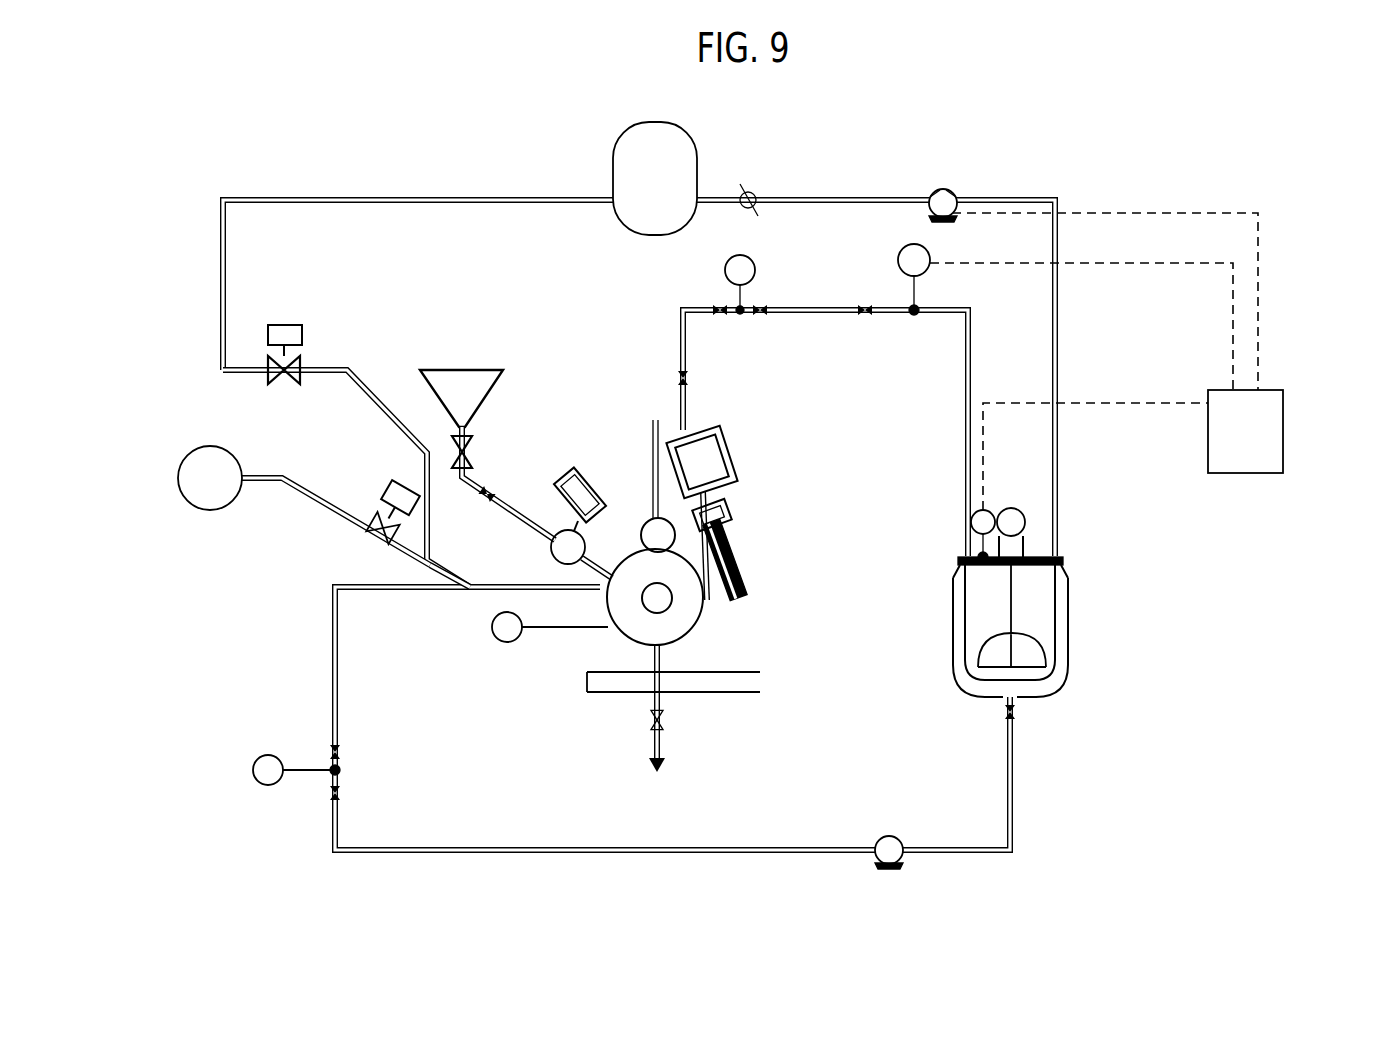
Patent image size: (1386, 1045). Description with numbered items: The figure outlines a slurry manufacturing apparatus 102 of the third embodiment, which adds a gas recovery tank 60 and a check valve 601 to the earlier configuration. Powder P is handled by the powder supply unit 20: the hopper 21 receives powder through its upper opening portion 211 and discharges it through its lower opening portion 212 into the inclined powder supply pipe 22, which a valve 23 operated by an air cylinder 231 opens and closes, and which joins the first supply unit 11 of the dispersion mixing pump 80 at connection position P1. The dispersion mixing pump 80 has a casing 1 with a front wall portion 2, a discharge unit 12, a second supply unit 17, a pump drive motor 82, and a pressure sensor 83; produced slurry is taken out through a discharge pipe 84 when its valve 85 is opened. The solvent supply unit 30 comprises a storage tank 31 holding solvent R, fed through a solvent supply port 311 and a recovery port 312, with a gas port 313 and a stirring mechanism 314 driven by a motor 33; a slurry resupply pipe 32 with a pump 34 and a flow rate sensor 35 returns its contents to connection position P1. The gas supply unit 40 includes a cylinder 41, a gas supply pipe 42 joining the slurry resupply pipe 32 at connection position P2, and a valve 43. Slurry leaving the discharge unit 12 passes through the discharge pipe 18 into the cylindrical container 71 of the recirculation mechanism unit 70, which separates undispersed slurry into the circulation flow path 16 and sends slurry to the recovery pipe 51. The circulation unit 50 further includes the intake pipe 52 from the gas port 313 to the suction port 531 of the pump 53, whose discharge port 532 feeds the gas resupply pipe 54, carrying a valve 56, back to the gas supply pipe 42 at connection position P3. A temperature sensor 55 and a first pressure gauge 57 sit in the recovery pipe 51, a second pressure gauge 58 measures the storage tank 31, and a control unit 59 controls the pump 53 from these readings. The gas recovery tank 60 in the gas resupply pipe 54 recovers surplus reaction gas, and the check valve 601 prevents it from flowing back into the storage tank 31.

The casing 1 is at (695, 622).
The front wall portion 2 is at (606, 631).
The first supply unit 11 is at (636, 520).
The discharge unit 12 is at (674, 598).
The circulation flow path 16 is at (735, 522).
The second supply unit 17 is at (670, 618).
The discharge pipe 18 is at (727, 504).
The powder supply unit 20 is at (510, 334).
The hopper 21 is at (472, 397).
The powder supply pipe 22 is at (492, 518).
The valve 23 is at (548, 538).
The solvent supply unit 30 is at (1012, 912).
The storage tank 31 is at (1110, 597).
The slurry resupply pipe 32 is at (690, 853).
The motor 33 is at (1003, 482).
The pump 34 is at (890, 834).
The flow rate sensor 35 is at (252, 770).
The gas supply unit 40 is at (250, 514).
The cylinder 41 is at (178, 478).
The gas supply pipe 42 is at (308, 498).
The valve 43 is at (360, 534).
The circulation unit 50 is at (1105, 241).
The recovery pipe 51 is at (812, 305).
The intake pipe 52 is at (1059, 330).
The pump 53 is at (943, 186).
The gas resupply pipe 54 is at (489, 198).
The temperature sensor 55 is at (722, 270).
The valve 56 is at (286, 386).
The first pressure gauge 57 is at (932, 252).
The second pressure gauge 58 is at (974, 517).
The control unit 59 is at (1262, 440).
The gas recovery tank 60 is at (700, 150).
The recirculation mechanism unit 70 is at (776, 448).
The cylindrical container 71 is at (700, 430).
The dispersion mixing pump 80 is at (582, 706).
The pump drive motor 82 is at (655, 447).
The pressure sensor 83 is at (507, 644).
The discharge pipe 84 is at (650, 742).
The valve 85 is at (668, 738).
The slurry manufacturing apparatus 102 is at (1165, 157).
The upper opening portion 211 is at (438, 360).
The lower opening portion 212 is at (480, 460).
The air cylinder 231 is at (603, 484).
The solvent supply port 311 is at (1042, 528).
The recovery port 312 is at (962, 546).
The gas port 313 is at (1062, 548).
The stirring mechanism 314 is at (1048, 656).
The suction port 531 is at (958, 190).
The discharge port 532 is at (930, 190).
The check valve 601 is at (755, 195).
The powder P is at (458, 365).
The connection position P1 is at (620, 518).
The connection position P2 is at (468, 596).
The connection position P3 is at (430, 582).
The solvent R is at (1019, 520).